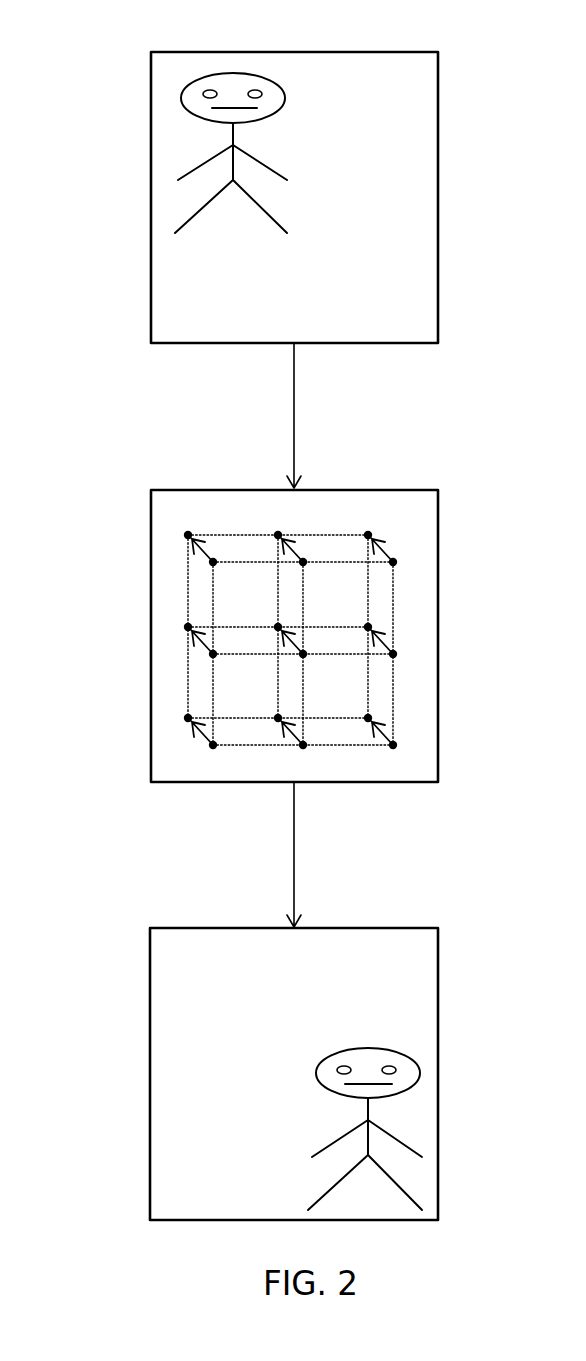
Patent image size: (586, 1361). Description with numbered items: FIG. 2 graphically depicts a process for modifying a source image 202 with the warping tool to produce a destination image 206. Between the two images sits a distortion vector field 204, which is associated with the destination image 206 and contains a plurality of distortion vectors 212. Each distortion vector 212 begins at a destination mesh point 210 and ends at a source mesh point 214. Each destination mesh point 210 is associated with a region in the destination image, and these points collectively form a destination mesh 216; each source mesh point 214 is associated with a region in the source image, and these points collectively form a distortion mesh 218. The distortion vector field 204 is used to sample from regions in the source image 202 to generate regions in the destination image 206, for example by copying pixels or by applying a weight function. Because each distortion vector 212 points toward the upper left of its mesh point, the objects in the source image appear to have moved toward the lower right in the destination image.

The source image 202 is at (438, 73).
The distortion vector field 204 is at (438, 528).
The destination image 206 is at (435, 947).
The destination mesh point 210 is at (215, 748).
The distortion vector 212 is at (207, 734).
The source mesh point 214 is at (187, 717).
The destination mesh 216 is at (392, 608).
The distortion mesh 218 is at (370, 692).